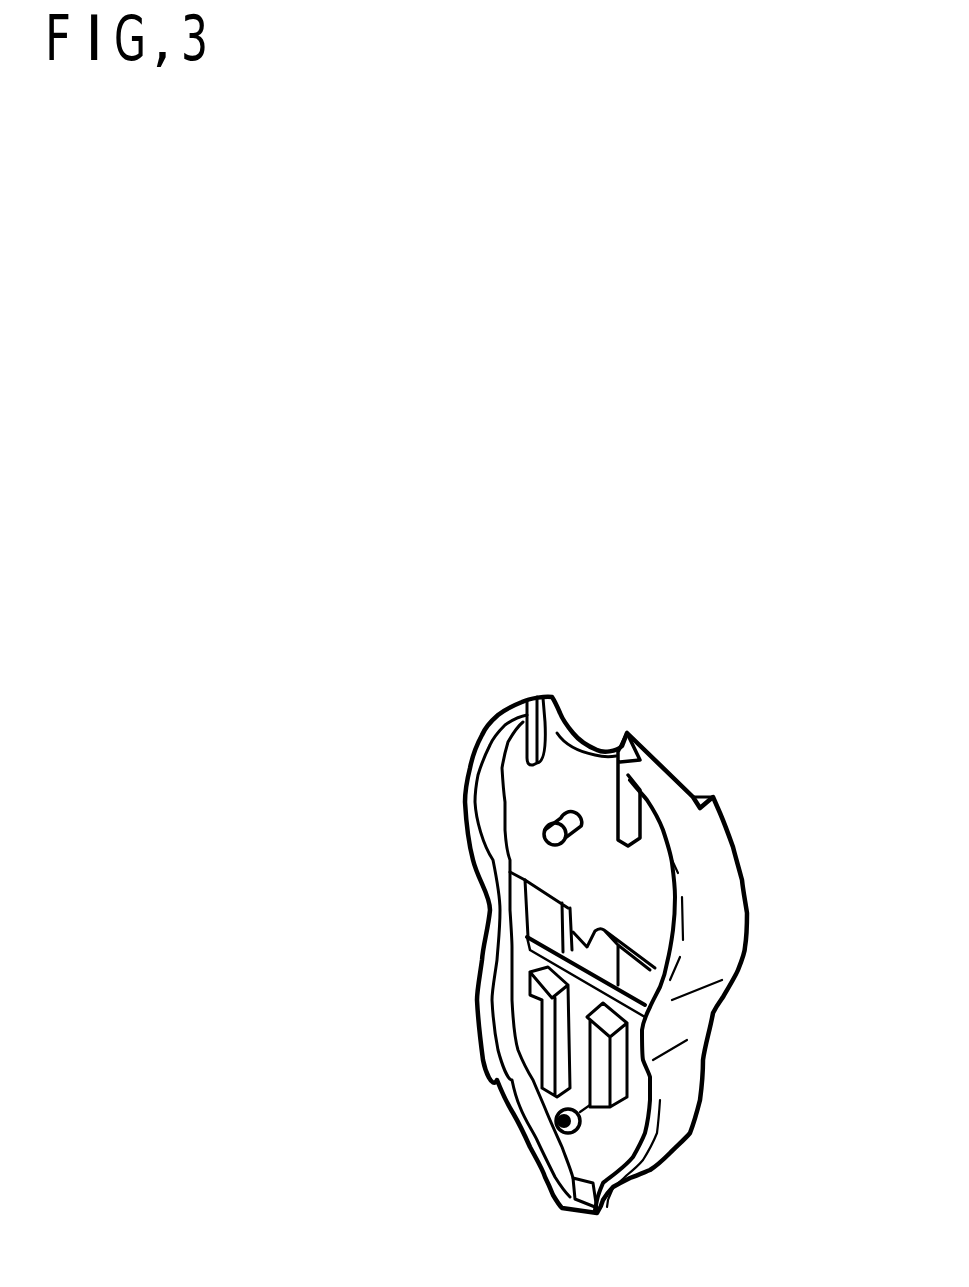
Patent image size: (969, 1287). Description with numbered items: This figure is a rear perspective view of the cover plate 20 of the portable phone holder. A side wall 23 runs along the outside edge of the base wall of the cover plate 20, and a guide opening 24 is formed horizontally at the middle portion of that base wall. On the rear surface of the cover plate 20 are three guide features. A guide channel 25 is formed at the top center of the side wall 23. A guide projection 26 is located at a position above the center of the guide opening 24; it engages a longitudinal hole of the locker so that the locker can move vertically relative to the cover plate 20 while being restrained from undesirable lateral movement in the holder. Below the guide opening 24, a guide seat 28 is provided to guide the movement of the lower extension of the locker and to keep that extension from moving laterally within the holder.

The cover plate 20 is at (722, 743).
The side wall 23 is at (482, 1062).
The guide opening 24 is at (518, 928).
The guide channel 25 is at (613, 750).
The guide projection 26 is at (550, 812).
The guide seat 28 is at (600, 1100).